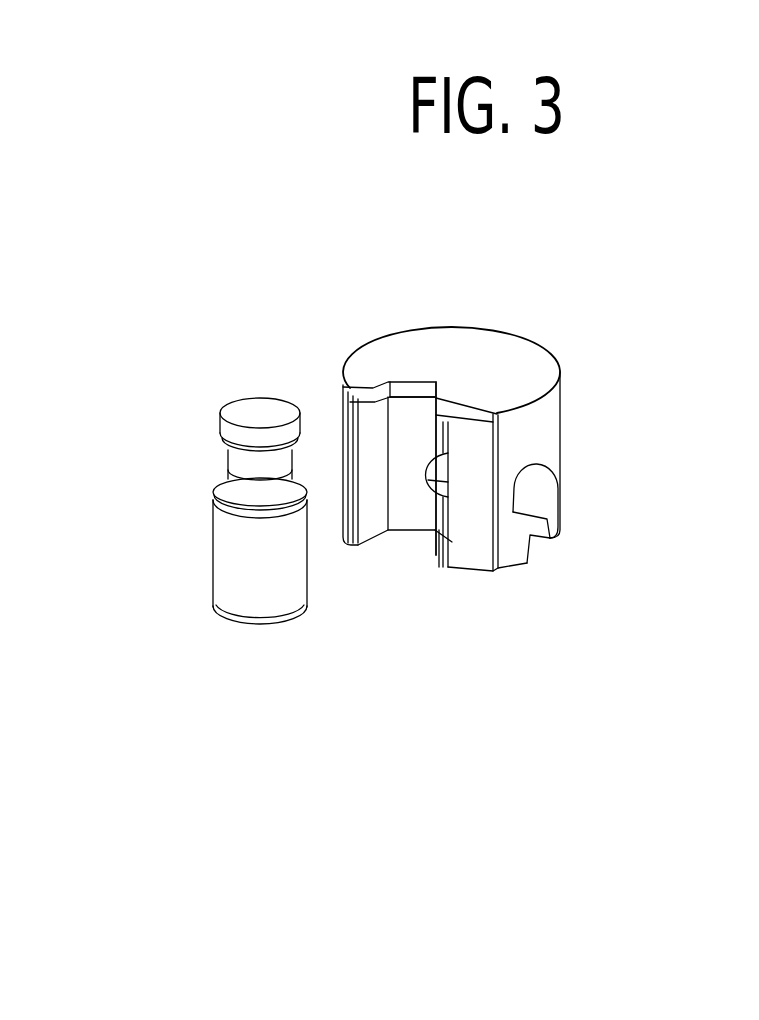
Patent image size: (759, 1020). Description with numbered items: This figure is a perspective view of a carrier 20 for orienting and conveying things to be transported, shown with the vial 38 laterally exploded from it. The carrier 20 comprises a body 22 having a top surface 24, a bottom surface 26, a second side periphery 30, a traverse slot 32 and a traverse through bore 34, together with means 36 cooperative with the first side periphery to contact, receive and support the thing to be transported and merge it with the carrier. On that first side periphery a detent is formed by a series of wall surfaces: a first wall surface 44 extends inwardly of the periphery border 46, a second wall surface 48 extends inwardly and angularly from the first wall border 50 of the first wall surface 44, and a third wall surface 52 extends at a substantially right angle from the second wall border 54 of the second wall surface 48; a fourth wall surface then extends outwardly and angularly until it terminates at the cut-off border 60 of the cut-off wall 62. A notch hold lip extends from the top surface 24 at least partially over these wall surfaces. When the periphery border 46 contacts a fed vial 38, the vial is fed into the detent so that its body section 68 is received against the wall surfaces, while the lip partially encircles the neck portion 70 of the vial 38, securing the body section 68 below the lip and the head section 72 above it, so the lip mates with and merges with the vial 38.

The carrier 20 is at (644, 421).
The body 22 is at (594, 468).
The top surface 24 is at (375, 298).
The bottom surface 26 is at (582, 611).
The second side periphery 30 is at (498, 321).
The traverse slot 32 is at (630, 566).
The traverse through bore 34 is at (628, 501).
The means cooperative with the first side periphery 36 is at (292, 397).
The vial 38 is at (193, 528).
The first wall surface 44 is at (334, 609).
The periphery border 46 is at (285, 432).
The second wall surface 48 is at (365, 588).
The first wall border 50 is at (329, 567).
The third wall surface 52 is at (491, 589).
The second wall border 54 is at (383, 627).
The cut-off border 60 is at (538, 609).
The cut-off wall 62 is at (559, 594).
The body section 68 is at (193, 541).
The neck portion 70 is at (188, 491).
The head section 72 is at (197, 415).